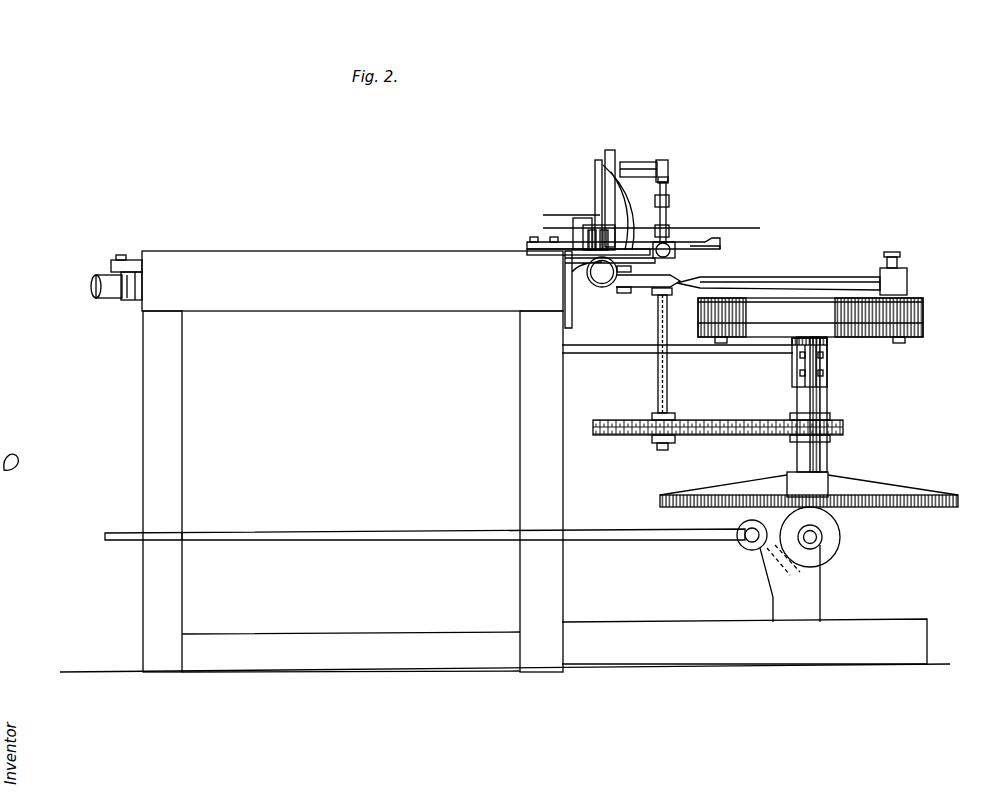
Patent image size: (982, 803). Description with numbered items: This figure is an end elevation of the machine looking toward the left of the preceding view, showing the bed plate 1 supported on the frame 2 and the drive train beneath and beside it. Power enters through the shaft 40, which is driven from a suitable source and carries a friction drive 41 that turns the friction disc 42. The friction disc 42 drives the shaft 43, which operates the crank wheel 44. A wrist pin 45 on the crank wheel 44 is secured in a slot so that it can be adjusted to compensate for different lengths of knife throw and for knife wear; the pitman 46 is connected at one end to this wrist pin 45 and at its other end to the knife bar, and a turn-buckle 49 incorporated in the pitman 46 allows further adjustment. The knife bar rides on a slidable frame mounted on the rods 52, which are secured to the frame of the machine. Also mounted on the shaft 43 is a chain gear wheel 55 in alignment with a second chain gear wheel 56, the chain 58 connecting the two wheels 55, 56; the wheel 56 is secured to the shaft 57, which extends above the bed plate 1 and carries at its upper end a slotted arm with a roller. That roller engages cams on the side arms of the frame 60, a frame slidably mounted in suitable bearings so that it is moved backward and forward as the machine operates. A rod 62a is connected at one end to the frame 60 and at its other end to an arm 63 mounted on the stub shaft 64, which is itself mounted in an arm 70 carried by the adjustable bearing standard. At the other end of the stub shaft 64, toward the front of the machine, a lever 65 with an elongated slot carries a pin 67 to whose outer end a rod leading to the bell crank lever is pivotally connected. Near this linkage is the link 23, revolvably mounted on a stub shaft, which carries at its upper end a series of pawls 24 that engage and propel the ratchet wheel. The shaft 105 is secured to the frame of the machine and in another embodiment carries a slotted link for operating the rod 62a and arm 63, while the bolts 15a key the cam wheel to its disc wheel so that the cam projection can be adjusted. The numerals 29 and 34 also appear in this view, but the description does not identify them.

The bed plate 1 is at (337, 296).
The frame 2 is at (172, 437).
The bolts 15a is at (722, 343).
The link 23 is at (712, 240).
The pawls 24 is at (668, 226).
The housing block 29 is at (585, 201).
The collar 34 is at (668, 180).
The shaft 40 is at (812, 541).
The friction drive 41 is at (840, 533).
The friction disc 42 is at (872, 490).
The shaft 43 is at (828, 400).
The crank wheel 44 is at (922, 330).
The wrist pin 45 is at (896, 290).
The pitman 46 is at (841, 277).
The turn-buckle 49 is at (645, 286).
The rods 52 is at (110, 291).
The chain gear wheel 55 is at (598, 271).
The chain gear wheel 56 is at (653, 416).
The shaft 57 is at (668, 385).
The chain 58 is at (745, 433).
The frame 60 is at (722, 243).
The rod 62a is at (670, 214).
The arm 63 is at (667, 162).
The stub shaft 64 is at (650, 160).
The lever 65 is at (614, 155).
The pin 67 is at (600, 160).
The arm 70 is at (630, 193).
The shaft 105 is at (670, 254).